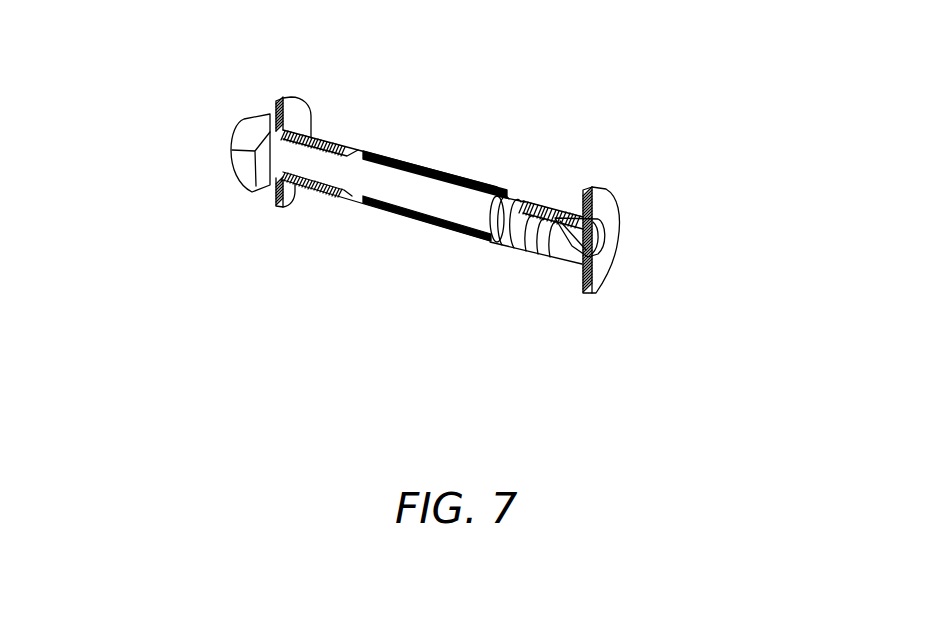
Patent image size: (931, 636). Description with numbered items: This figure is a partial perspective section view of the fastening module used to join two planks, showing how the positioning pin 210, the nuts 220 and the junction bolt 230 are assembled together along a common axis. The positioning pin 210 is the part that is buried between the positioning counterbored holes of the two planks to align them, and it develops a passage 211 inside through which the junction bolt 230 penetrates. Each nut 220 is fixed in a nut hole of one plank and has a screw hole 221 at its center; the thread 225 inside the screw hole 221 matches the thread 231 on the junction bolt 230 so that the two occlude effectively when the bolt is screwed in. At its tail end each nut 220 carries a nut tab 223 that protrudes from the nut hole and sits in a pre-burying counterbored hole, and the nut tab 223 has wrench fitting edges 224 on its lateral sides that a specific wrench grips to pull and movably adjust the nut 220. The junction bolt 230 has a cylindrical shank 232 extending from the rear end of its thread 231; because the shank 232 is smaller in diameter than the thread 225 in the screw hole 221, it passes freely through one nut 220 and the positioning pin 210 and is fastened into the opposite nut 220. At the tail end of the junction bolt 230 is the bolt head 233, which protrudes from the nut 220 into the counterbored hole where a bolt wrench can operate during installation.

The positioning pin 210 is at (456, 156).
The passage 211 is at (421, 204).
The nut 220 is at (354, 94).
The screw hole 221 is at (600, 223).
The nut tab 223 is at (279, 100).
The wrench fitting edges 224 is at (310, 128).
The thread 225 is at (537, 194).
The junction bolt 230 is at (194, 198).
The thread 231 is at (530, 249).
The cylindrical shank 232 is at (353, 189).
The bolt head 233 is at (241, 120).